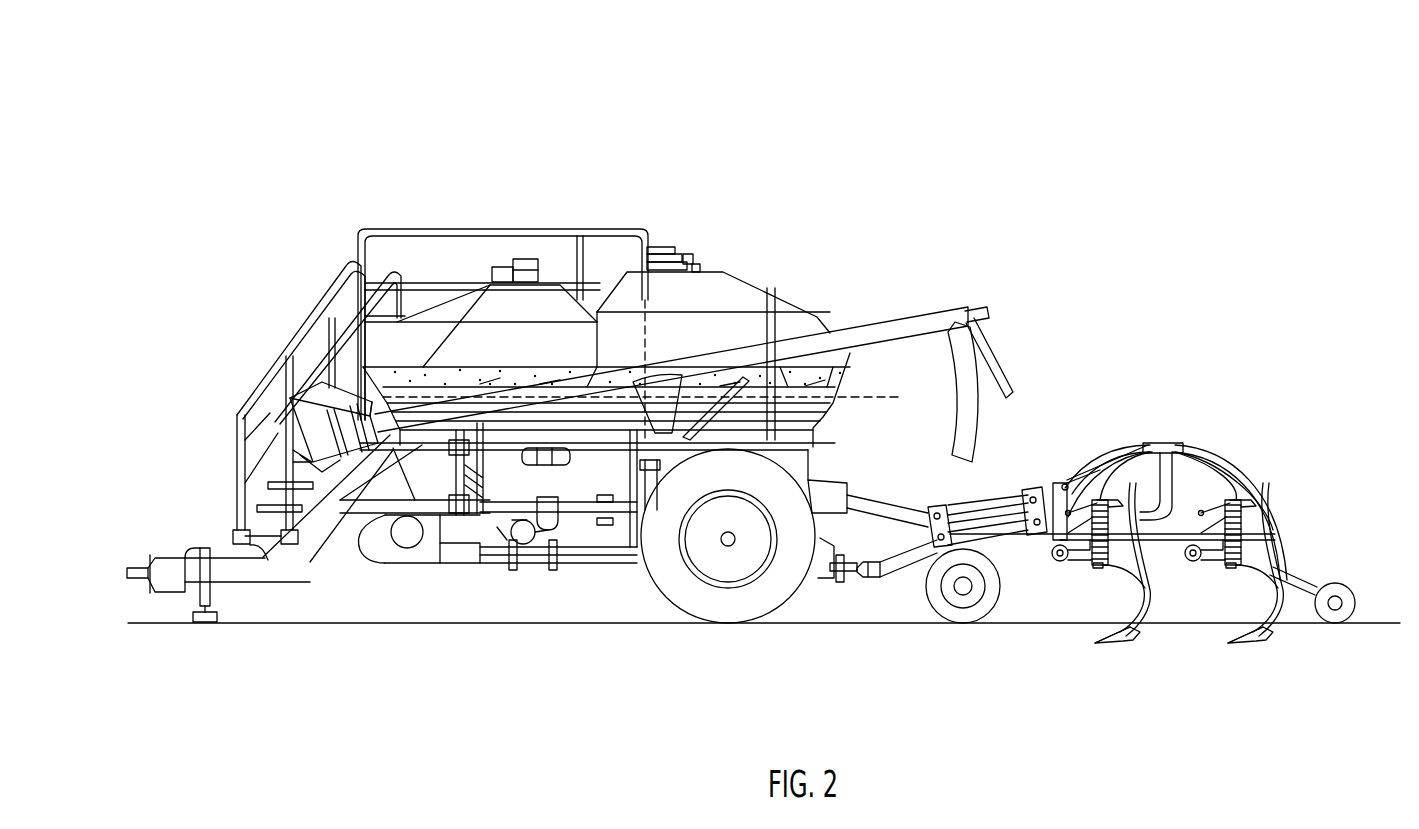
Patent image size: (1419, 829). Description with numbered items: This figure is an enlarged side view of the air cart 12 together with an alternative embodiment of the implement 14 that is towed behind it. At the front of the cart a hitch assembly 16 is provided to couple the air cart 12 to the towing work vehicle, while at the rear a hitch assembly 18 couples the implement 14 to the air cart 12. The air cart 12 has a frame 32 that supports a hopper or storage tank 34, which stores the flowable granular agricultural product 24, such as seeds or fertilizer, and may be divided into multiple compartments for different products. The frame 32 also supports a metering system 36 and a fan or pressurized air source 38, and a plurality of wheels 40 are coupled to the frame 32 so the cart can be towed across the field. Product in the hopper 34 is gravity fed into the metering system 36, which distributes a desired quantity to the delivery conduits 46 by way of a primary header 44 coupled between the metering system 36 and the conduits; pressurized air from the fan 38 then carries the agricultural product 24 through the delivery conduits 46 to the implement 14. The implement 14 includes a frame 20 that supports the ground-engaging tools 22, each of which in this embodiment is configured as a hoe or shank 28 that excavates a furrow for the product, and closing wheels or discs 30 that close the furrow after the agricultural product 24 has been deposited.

The air cart 12 is at (546, 128).
The implement 14 is at (1207, 367).
The hitch assembly 16 is at (240, 567).
The hitch assembly 18 is at (893, 565).
The frame 20 is at (1160, 535).
The ground-engaging tools 22 is at (1111, 660).
The agricultural product 24 is at (836, 380).
The hoe or shank 28 is at (1135, 640).
The closing wheels or discs 30 is at (1333, 565).
The frame 32 is at (357, 508).
The hopper or storage tank 34 is at (486, 300).
The metering system 36 is at (490, 602).
The fan or pressurized air source 38 is at (390, 540).
The wheels 40 is at (732, 603).
The primary header 44 is at (527, 562).
The delivery conduits 46 is at (858, 458).